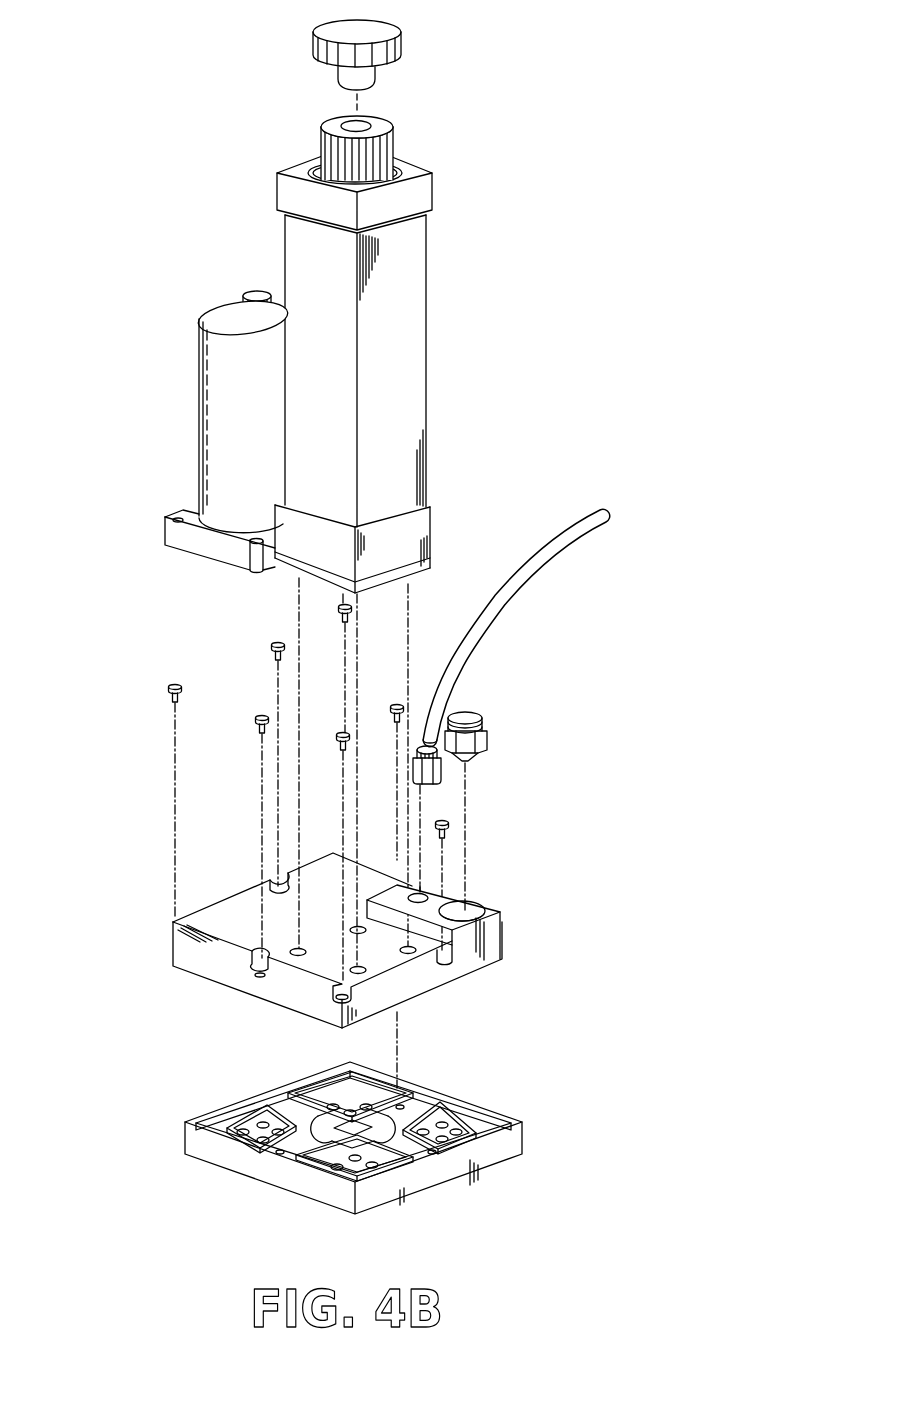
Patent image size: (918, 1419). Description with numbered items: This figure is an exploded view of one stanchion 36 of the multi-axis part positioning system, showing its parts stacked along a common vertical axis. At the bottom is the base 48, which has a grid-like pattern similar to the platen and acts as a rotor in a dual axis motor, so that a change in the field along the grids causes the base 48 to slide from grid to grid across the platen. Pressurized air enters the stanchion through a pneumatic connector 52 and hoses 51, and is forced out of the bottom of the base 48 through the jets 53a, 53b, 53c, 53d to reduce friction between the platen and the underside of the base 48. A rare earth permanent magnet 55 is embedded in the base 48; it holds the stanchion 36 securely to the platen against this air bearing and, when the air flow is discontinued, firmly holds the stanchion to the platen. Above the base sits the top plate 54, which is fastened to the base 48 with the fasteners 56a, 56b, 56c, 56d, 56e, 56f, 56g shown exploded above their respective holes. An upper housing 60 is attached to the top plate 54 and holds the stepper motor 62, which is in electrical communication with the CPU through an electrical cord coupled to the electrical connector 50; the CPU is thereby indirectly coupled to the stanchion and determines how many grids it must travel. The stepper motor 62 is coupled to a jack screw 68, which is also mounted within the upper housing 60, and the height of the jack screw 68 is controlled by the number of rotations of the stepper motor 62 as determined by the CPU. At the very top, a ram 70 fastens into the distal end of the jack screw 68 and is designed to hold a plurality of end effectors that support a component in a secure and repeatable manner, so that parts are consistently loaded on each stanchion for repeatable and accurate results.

The ram 70 is at (418, 40).
The jack screw 68 is at (418, 145).
The stepper motor 62 is at (190, 380).
The upper housing 60 is at (187, 537).
The hoses 51 is at (622, 497).
The stanchion 36 is at (651, 661).
The electrical connector 50 is at (509, 741).
The pneumatic connector 52 is at (477, 819).
The fastener 56a is at (343, 728).
The fastener 56b is at (248, 725).
The fastener 56c is at (157, 699).
The fastener 56d is at (270, 647).
The fastener 56e is at (353, 612).
The fastener 56f is at (395, 693).
The fastener 56g is at (457, 825).
The top plate 54 is at (210, 957).
The base 48 is at (359, 1147).
The jet 53a is at (347, 1103).
The jet 53b is at (443, 1122).
The jet 53c is at (358, 1168).
The jet 53d is at (260, 1127).
The rare earth permanent magnet 55 is at (383, 1132).